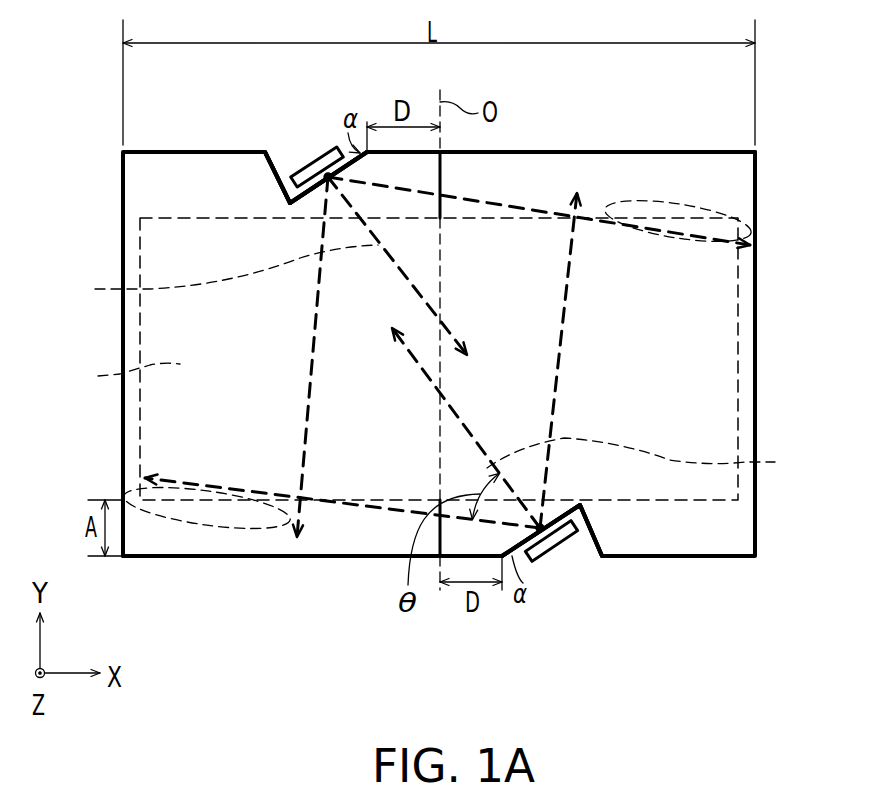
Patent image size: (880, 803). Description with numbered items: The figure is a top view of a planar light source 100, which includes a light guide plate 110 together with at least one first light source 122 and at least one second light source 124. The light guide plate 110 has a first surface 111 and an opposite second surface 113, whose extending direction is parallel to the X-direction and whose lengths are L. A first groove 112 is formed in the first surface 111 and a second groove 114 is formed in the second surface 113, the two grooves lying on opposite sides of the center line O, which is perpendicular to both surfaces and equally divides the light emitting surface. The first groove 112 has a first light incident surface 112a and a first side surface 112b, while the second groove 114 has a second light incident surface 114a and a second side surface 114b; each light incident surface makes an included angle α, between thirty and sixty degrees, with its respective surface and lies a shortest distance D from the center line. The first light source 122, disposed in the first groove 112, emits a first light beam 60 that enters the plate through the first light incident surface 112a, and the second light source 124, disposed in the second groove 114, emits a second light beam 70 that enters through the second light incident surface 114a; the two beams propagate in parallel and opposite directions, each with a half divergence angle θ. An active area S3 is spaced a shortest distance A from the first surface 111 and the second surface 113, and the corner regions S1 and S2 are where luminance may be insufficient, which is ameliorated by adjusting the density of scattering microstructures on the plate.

The planar light source 100 is at (792, 675).
The light guide plate 110 is at (705, 351).
The first surface 111 is at (332, 560).
The second surface 113 is at (636, 150).
The second groove 114 is at (277, 152).
The second light incident surface 114a is at (311, 177).
The second side surface 114b is at (284, 171).
The second light source 124 is at (318, 159).
The first groove 112 is at (595, 556).
The first light incident surface 112a is at (557, 530).
The first side surface 112b is at (583, 543).
The first light source 122 is at (541, 560).
The second light beam 70 is at (220, 276).
The first light beam 60 is at (647, 459).
The corner region S1 is at (740, 208).
The corner region S2 is at (222, 518).
The active area S3 is at (122, 376).